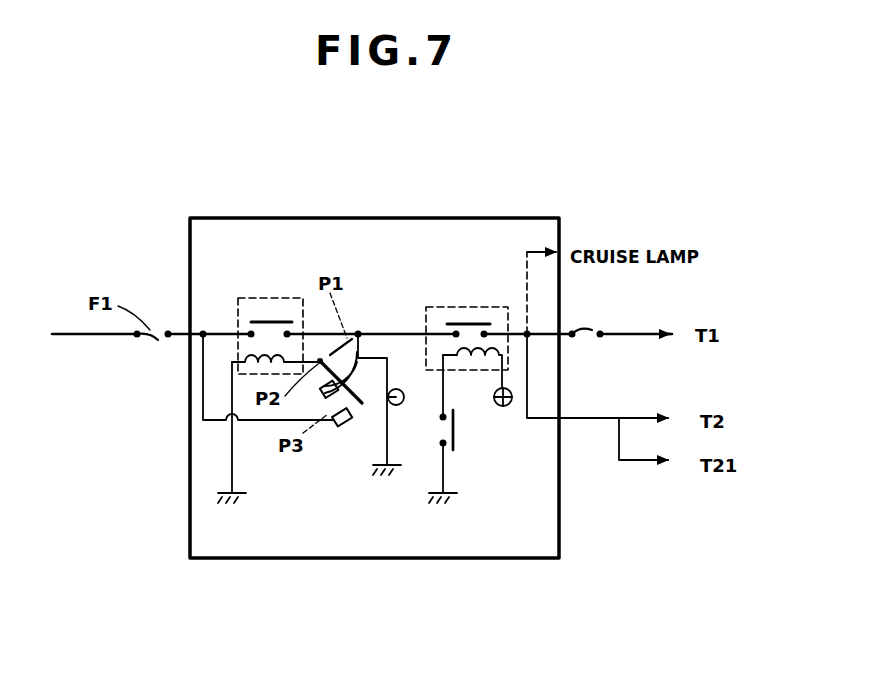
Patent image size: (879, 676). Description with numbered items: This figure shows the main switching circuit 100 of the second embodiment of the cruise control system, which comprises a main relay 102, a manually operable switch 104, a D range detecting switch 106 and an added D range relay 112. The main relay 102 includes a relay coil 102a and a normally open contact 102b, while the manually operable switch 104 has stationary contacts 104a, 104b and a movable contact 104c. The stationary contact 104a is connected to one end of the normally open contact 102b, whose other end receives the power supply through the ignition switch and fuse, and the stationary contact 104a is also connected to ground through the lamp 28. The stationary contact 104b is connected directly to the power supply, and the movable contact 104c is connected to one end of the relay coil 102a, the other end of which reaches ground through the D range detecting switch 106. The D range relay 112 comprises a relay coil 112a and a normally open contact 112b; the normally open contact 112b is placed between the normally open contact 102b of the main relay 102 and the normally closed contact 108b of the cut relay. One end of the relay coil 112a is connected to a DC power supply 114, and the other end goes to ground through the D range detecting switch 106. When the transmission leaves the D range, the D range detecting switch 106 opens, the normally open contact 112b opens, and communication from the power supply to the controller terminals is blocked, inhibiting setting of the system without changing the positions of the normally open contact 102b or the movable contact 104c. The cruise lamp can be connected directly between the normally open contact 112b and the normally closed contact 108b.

The main switching circuit 100 is at (341, 218).
The main relay 102 is at (245, 298).
The relay coil 102a is at (243, 357).
The normally open contact 102b is at (253, 322).
The manually operable switch 104 is at (333, 450).
The stationary contact 104a is at (366, 374).
The stationary contact 104b is at (336, 424).
The movable contact 104c is at (356, 385).
The D range detecting switch 106 is at (455, 435).
The normally closed contact 108b is at (590, 333).
The D range relay 112 is at (493, 307).
The relay coil 112a is at (485, 430).
The normally open contact 112b is at (455, 322).
The DC power supply 114 is at (512, 393).
The lamp 28 is at (400, 406).